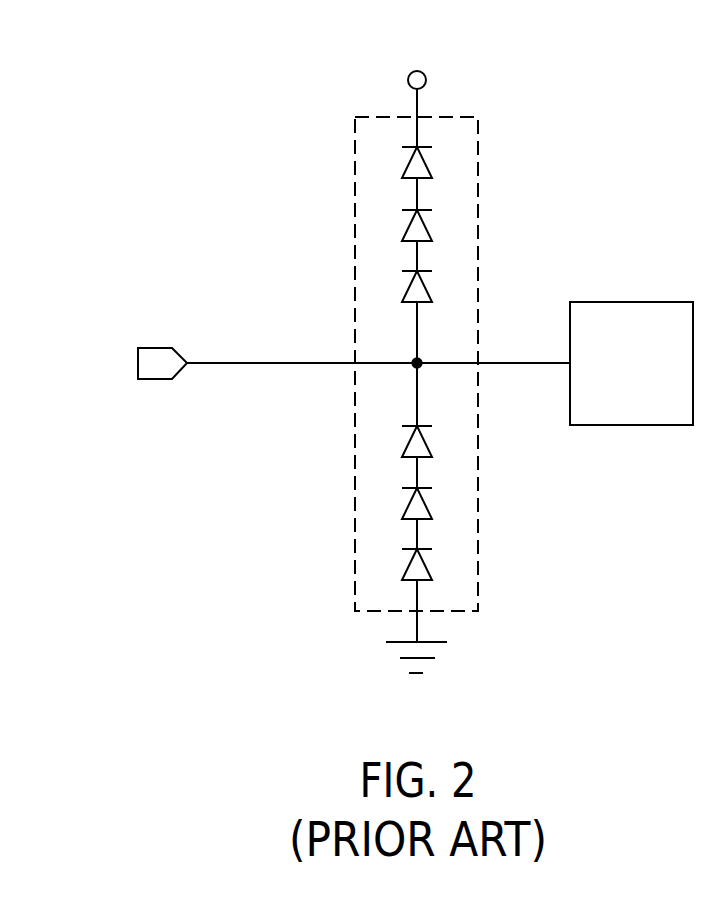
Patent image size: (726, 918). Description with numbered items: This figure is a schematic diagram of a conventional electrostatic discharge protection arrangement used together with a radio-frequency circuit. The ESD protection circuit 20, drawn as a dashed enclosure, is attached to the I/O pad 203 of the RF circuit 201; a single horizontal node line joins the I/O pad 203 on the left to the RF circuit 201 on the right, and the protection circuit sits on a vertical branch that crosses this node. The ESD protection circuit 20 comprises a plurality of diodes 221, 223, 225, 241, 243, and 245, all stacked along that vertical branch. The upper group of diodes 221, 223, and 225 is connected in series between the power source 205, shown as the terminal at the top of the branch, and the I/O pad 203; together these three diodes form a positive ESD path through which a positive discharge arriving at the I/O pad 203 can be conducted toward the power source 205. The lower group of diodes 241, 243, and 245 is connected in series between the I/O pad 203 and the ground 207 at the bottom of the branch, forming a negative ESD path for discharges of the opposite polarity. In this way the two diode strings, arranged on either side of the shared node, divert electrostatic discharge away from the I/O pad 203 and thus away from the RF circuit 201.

The ESD protection circuit 20 is at (479, 184).
The RF circuit 201 is at (640, 302).
The I/O pad 203 is at (142, 346).
The power source 205 is at (428, 75).
The ground 207 is at (440, 644).
The diode 221 is at (404, 287).
The diode 223 is at (404, 226).
The diode 225 is at (404, 163).
The diode 241 is at (404, 442).
The diode 243 is at (404, 504).
The diode 245 is at (404, 565).